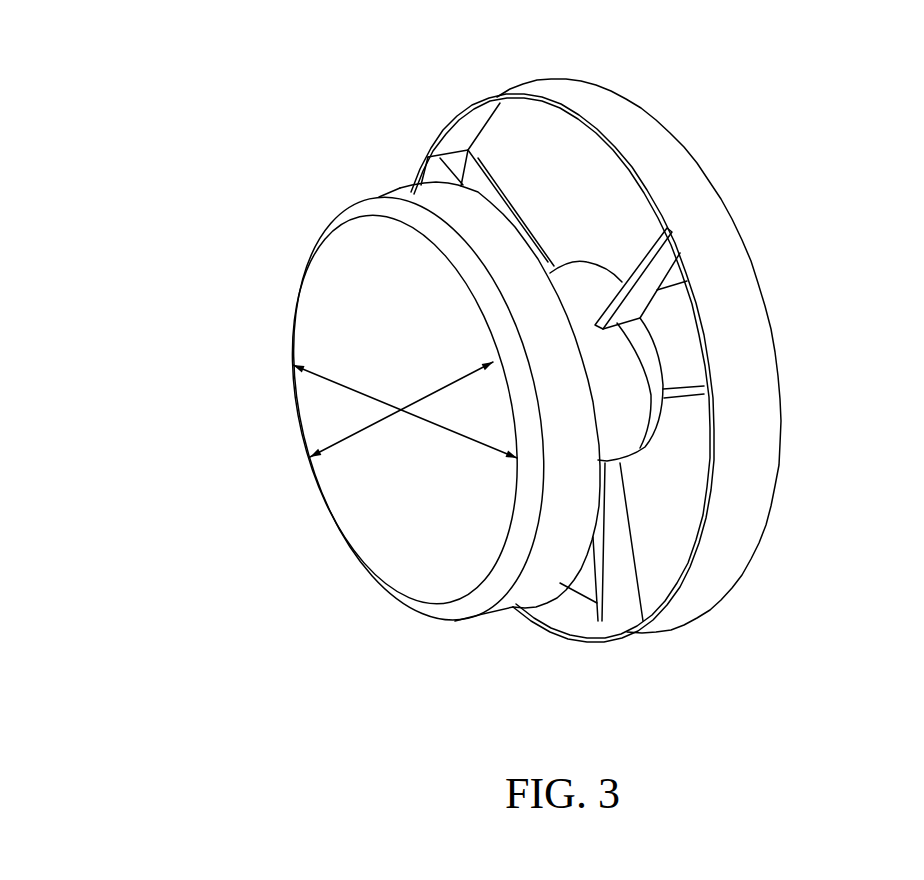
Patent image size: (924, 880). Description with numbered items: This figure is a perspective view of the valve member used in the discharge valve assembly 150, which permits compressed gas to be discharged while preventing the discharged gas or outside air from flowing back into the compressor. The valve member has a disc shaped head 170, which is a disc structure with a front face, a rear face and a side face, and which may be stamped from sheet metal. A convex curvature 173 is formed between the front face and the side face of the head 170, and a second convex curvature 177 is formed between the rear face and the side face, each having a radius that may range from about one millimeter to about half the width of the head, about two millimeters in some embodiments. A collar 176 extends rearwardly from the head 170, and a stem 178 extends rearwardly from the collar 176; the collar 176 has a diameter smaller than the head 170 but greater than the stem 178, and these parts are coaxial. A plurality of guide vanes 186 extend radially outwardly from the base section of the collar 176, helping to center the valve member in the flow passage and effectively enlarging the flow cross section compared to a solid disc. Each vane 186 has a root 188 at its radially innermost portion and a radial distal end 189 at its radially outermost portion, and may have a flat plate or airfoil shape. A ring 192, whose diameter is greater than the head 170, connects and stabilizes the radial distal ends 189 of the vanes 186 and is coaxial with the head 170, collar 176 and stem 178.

The discharge valve assembly 150 is at (177, 247).
The head 170 is at (403, 187).
The convex curvature 173 is at (365, 197).
The collar 176 is at (605, 265).
The convex curvature 177 is at (432, 150).
The stem 178 is at (663, 393).
The guide vanes 186 is at (597, 603).
The root 188 is at (660, 403).
The radial distal end 189 is at (645, 625).
The ring 192 is at (758, 290).